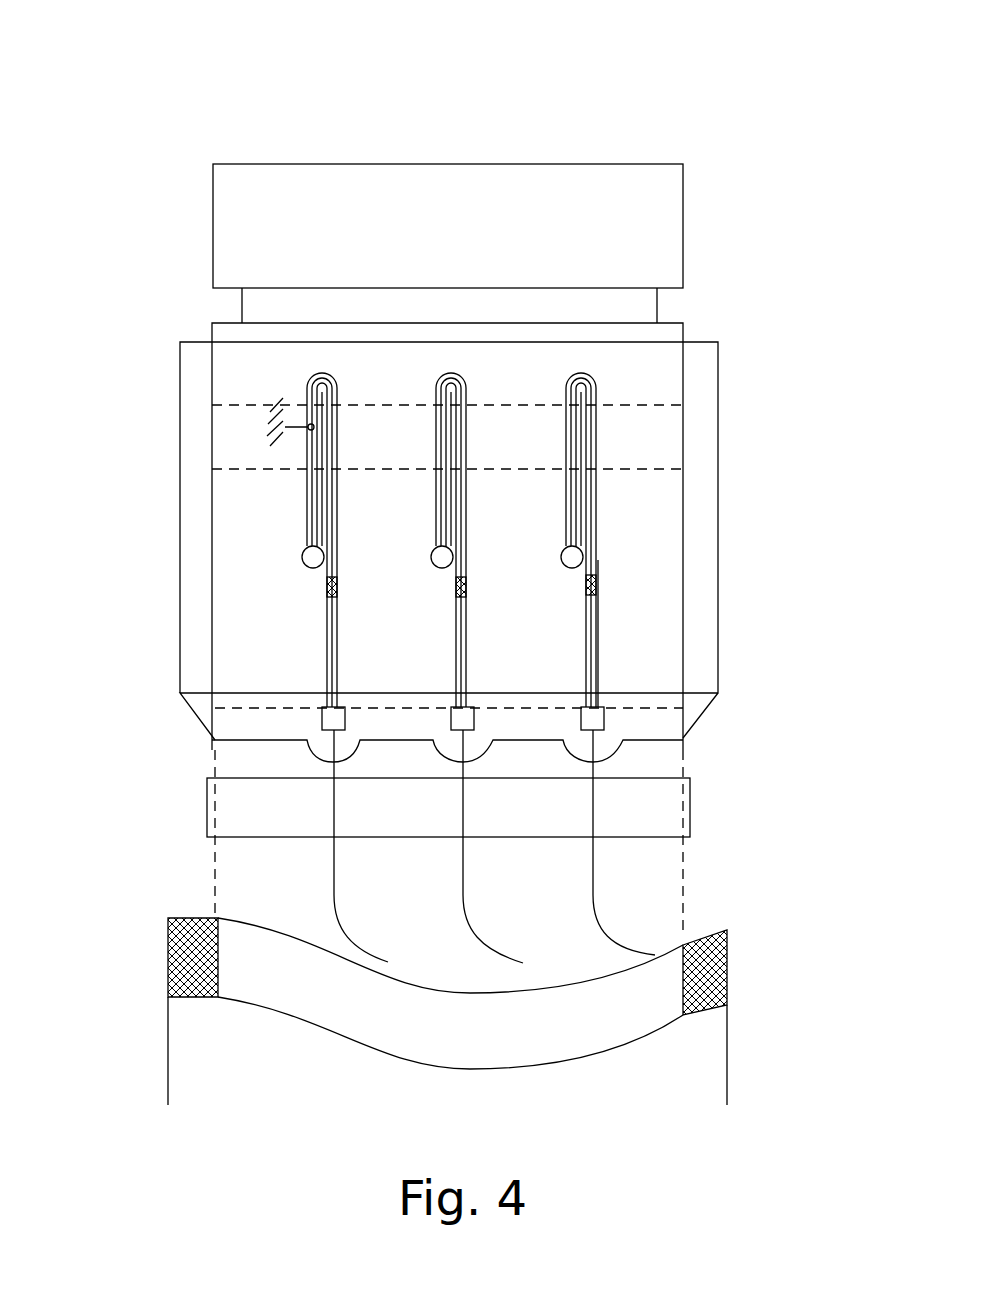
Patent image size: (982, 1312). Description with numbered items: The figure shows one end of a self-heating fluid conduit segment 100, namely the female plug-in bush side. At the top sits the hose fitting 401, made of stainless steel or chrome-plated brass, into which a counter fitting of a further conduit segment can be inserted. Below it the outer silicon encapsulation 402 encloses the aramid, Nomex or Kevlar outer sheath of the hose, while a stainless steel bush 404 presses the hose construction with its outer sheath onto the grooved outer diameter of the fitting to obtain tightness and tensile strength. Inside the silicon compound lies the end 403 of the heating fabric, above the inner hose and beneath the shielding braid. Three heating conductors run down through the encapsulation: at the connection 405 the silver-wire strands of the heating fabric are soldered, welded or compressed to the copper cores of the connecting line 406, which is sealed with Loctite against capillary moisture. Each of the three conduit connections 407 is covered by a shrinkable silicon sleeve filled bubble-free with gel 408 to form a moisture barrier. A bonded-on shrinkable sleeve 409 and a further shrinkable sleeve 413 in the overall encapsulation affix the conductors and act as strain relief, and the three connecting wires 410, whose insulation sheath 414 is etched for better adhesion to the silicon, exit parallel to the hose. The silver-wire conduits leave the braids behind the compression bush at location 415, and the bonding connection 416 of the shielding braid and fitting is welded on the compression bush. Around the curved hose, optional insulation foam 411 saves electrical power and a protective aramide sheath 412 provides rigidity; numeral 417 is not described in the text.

The self-heating fluid conduit segment 100 is at (692, 78).
The hose fitting 401 is at (662, 238).
The outer silicon encapsulation 402 is at (697, 362).
The end of the heating fabric 403 is at (660, 405).
The stainless steel bush 404 is at (684, 440).
The connection of the heating-fabric silver-wire strands 405 is at (596, 578).
The connecting line 406 is at (598, 590).
The conduit connections 407 is at (600, 628).
The gel 408 is at (600, 660).
The bonded-on shrinkable sleeve 409 is at (693, 790).
The connecting wires 410 is at (630, 937).
The insulation foam 411 is at (727, 975).
The aramide sheath 412 is at (442, 1026).
The shrinkable sleeve 413 is at (265, 708).
The insulation sheath 414 is at (326, 634).
The exit location of the silver-wire conduits 415 is at (308, 568).
The bonding connection 416 is at (303, 438).
The middle U-tube 417 is at (452, 551).